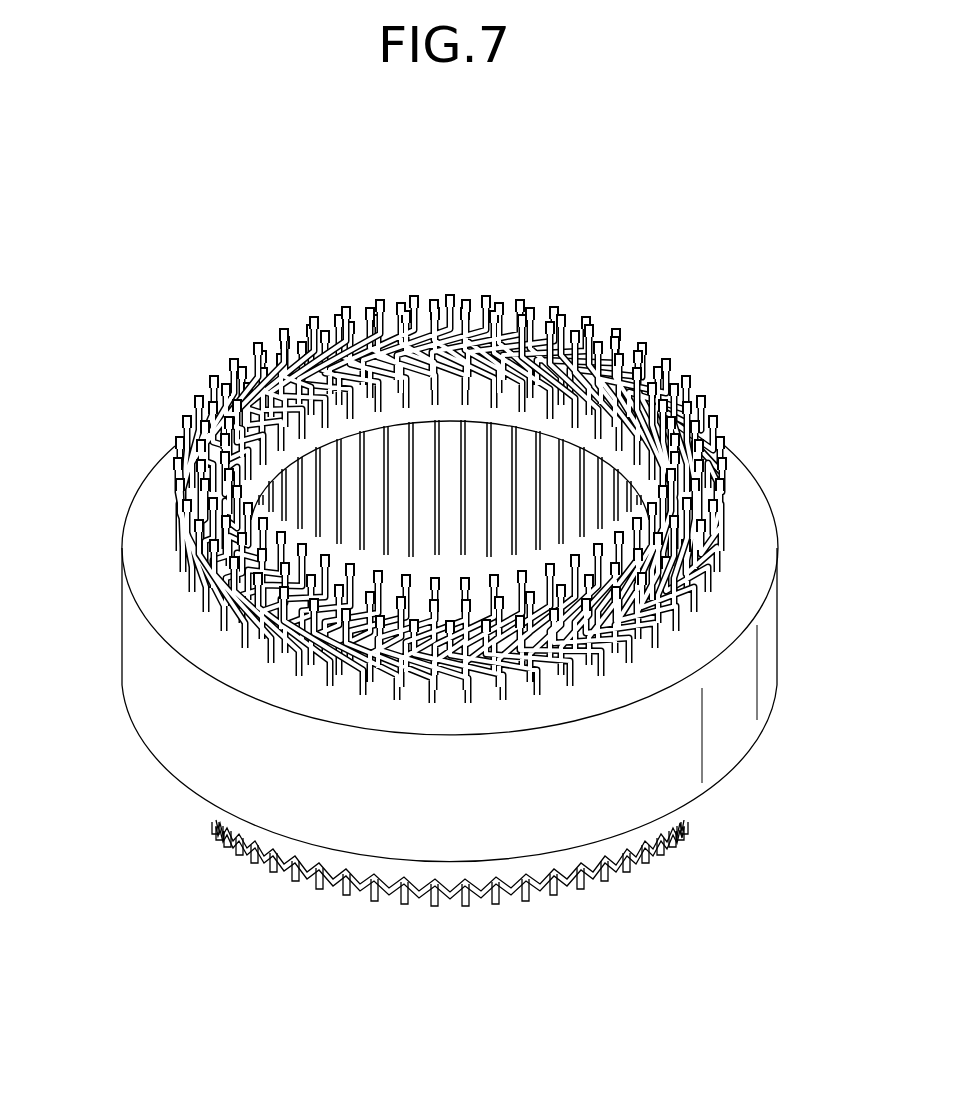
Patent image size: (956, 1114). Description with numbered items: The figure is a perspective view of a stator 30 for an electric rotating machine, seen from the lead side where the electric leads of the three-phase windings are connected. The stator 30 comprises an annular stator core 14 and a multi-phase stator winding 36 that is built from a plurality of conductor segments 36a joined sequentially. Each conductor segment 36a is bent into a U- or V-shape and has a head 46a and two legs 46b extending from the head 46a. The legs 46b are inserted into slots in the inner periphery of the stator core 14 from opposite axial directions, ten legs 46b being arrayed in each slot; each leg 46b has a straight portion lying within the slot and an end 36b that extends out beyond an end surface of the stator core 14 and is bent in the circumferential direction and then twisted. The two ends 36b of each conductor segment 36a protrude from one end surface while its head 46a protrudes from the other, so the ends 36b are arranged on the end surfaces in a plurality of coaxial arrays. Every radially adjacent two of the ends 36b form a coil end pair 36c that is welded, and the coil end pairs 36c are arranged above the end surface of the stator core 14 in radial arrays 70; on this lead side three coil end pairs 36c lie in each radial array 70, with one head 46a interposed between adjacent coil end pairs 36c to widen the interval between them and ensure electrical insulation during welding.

The stator core 14 is at (745, 490).
The stator 30 is at (387, 532).
The stator winding 36 is at (168, 395).
The conductor segment 36a is at (317, 873).
The end 36b is at (268, 665).
The coil end pair 36c is at (293, 332).
The head 46a is at (480, 882).
The leg 46b is at (205, 593).
The radial array 70 is at (603, 303).